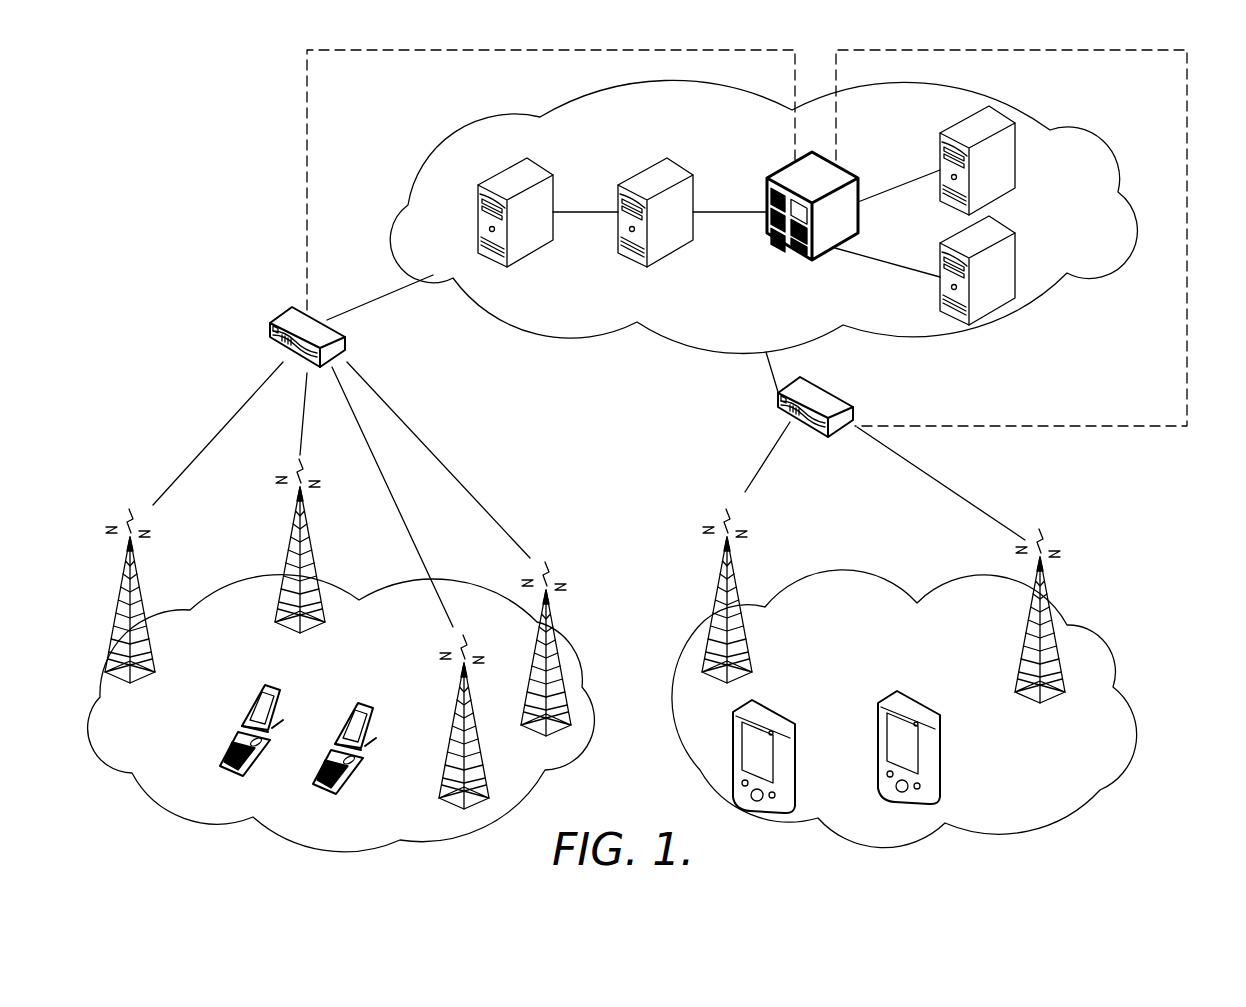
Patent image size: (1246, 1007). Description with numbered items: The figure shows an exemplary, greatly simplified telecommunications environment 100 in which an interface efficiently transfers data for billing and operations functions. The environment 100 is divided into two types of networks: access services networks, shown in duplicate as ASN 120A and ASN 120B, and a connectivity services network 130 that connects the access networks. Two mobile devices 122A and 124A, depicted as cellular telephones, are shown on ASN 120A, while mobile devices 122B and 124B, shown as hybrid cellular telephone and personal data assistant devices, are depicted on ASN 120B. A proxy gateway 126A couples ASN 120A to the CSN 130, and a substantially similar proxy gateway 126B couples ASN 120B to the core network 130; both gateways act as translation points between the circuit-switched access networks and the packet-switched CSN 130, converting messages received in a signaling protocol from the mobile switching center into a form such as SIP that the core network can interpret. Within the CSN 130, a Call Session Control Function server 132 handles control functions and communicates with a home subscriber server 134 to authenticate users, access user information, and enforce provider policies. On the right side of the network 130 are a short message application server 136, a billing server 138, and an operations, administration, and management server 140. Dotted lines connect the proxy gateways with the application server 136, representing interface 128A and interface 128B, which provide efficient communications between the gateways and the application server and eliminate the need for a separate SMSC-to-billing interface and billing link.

The telecommunications environment 100 is at (214, 92).
The access services network (ASN) 120A is at (333, 850).
The access services network (ASN) 120B is at (862, 852).
The mobile device 122A is at (267, 683).
The mobile device 124A is at (357, 707).
The mobile device 122B is at (770, 712).
The mobile device 124B is at (912, 705).
The proxy gateway 126A is at (283, 310).
The proxy gateway 126B is at (838, 390).
The interface 128A is at (307, 160).
The interface 128B is at (1187, 182).
The connectivity services network (CSN) 130 is at (392, 170).
The Call Session Control Function (CSCF) server 132 is at (492, 180).
The home subscriber server (HSS) 134 is at (632, 180).
The short message application server 136 is at (782, 163).
The billing server 138 is at (958, 118).
The operations, administration, and management (OAM) server 140 is at (958, 228).